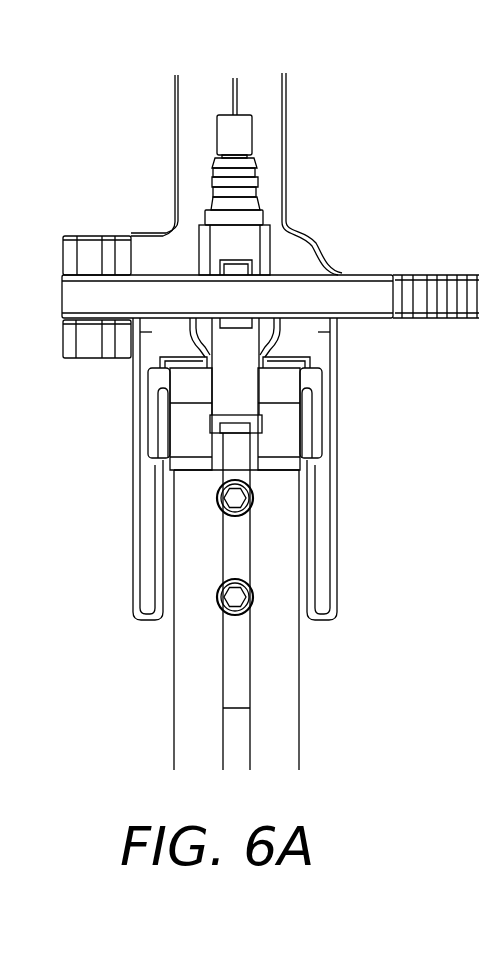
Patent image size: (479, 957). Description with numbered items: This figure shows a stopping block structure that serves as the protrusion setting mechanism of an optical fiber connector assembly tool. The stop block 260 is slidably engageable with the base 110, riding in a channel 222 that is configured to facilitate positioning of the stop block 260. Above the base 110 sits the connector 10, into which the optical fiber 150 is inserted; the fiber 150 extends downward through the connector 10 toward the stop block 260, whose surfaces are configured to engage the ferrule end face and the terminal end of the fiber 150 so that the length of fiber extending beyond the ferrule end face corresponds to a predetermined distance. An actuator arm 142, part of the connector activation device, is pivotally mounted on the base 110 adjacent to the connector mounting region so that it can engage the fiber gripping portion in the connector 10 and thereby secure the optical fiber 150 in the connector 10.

The connector 10 is at (243, 243).
The base 110 is at (187, 720).
The actuator arm 142 is at (365, 300).
The optical fiber 150 is at (237, 93).
The channel 222 is at (240, 735).
The stop block 260 is at (233, 662).